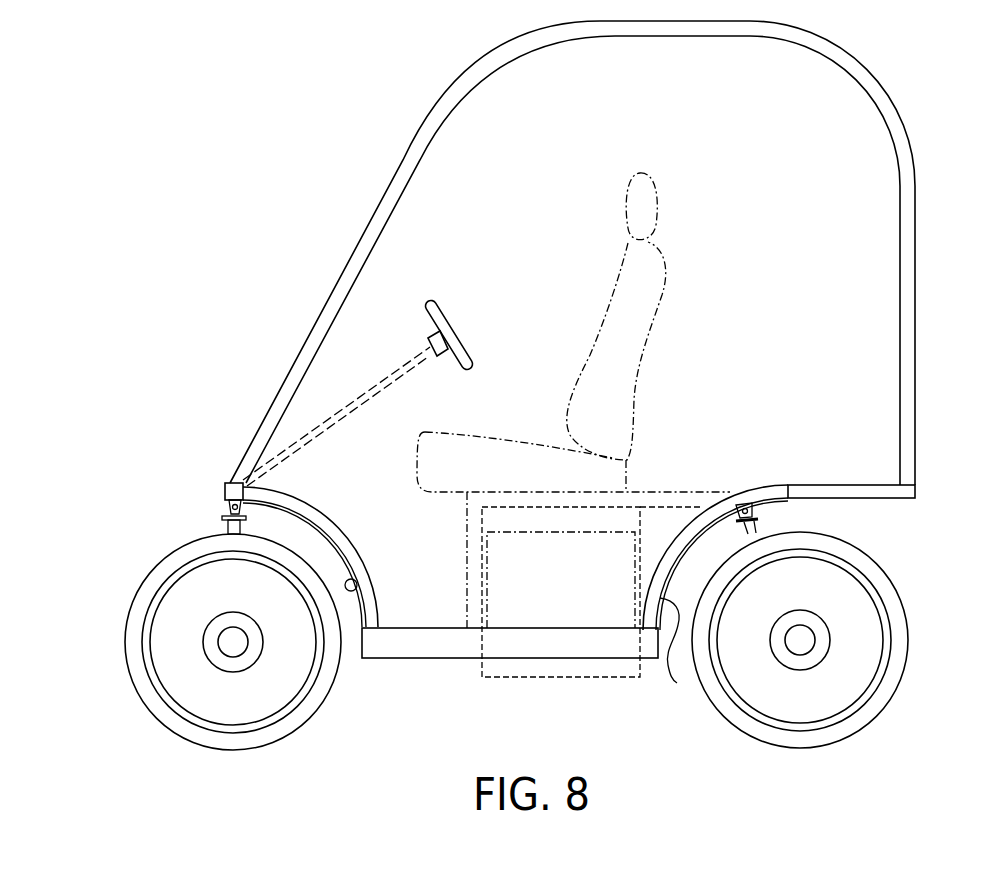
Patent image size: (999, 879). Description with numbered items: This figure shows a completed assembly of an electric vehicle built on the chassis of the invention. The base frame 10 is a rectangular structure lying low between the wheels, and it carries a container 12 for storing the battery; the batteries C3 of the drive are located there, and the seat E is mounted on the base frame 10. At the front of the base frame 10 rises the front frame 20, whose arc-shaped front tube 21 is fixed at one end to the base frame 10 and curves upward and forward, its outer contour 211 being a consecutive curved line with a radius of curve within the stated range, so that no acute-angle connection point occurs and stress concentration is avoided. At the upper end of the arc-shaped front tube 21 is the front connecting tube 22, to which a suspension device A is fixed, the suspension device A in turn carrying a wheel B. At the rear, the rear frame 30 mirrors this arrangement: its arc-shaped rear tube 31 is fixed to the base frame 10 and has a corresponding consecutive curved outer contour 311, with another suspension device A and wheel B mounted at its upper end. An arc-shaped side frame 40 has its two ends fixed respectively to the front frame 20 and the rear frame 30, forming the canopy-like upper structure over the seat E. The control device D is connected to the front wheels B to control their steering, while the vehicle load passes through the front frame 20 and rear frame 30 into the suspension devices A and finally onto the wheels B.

The base frame 10 is at (402, 655).
The container 12 is at (616, 668).
The front frame 20 is at (350, 527).
The arc-shaped front tube 21 is at (355, 555).
The outer contour 211 is at (356, 588).
The front connecting tube 22 is at (230, 483).
The rear frame 30 is at (779, 553).
The arc-shaped rear tube 31 is at (766, 490).
The outer contour 311 is at (682, 658).
The side frame 40 is at (906, 118).
The suspension device A is at (215, 515).
The wheel B is at (141, 608).
The battery C3 is at (498, 603).
The control device D is at (414, 350).
The seat E is at (630, 265).